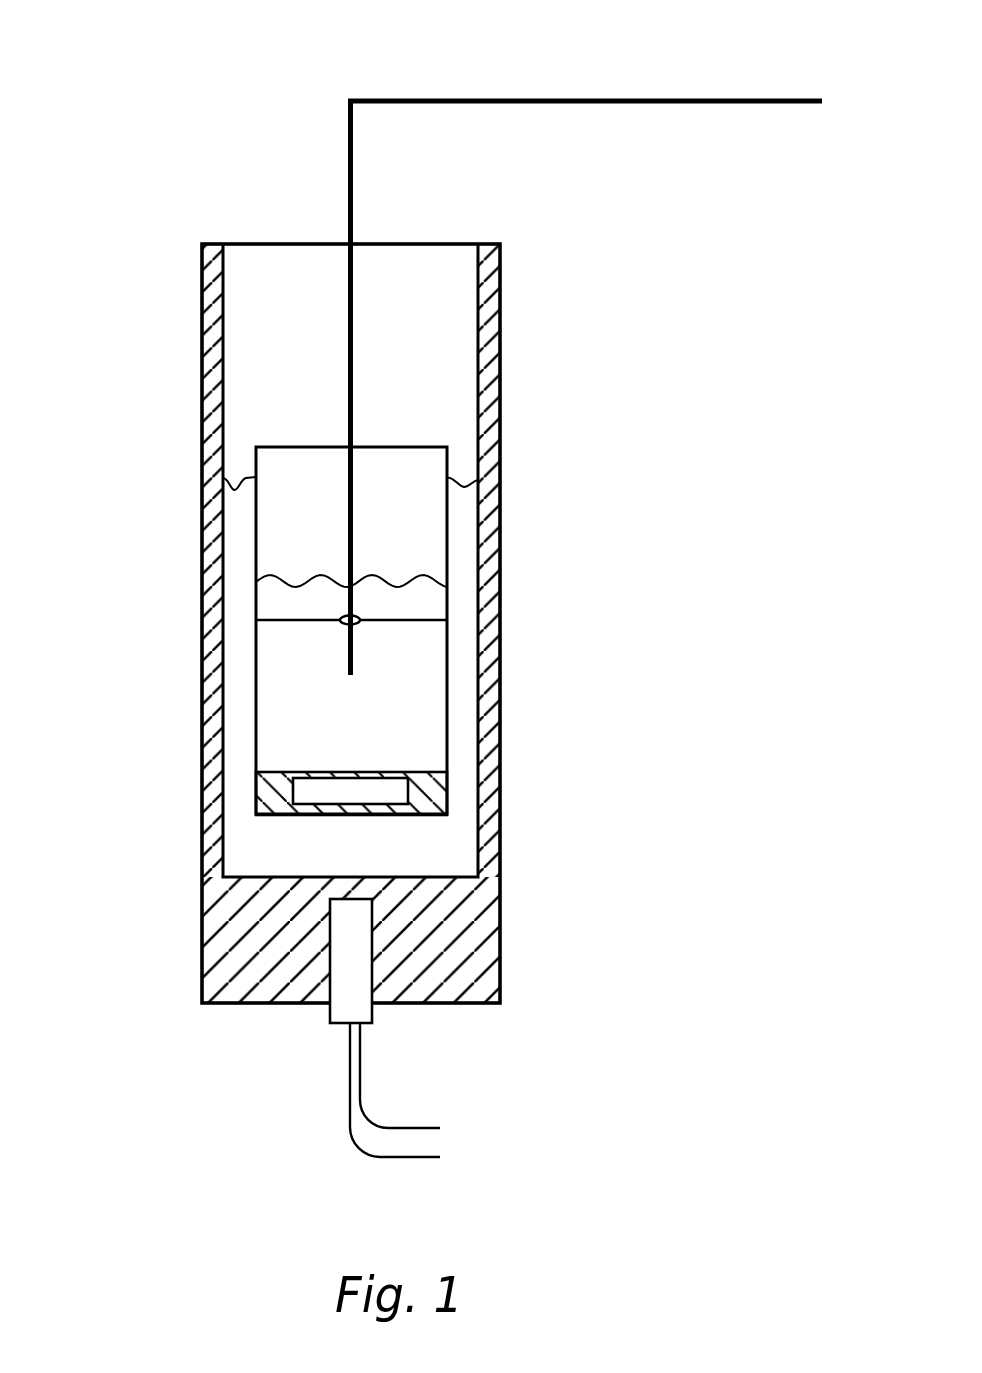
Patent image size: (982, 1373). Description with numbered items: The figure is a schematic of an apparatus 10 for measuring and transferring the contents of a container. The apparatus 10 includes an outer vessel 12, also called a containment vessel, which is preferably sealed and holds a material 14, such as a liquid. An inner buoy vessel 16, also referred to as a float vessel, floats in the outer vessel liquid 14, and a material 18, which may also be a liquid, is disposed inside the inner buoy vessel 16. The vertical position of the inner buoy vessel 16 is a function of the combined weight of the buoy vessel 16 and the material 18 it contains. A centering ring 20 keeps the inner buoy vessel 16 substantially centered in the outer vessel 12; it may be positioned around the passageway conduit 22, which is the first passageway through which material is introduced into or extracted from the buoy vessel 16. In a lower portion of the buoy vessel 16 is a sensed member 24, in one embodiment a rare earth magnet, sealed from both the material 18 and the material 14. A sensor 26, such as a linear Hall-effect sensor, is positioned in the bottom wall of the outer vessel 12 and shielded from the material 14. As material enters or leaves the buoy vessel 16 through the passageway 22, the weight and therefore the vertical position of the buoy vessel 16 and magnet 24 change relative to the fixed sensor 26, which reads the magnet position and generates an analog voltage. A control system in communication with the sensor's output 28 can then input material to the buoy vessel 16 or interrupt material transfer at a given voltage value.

The apparatus 10 is at (668, 421).
The outer vessel 12 is at (202, 295).
The material 14 is at (233, 490).
The inner buoy vessel 16 is at (447, 537).
The material 18 is at (291, 586).
The centering ring 20 is at (290, 622).
The passageway conduit 22 is at (585, 100).
The sensed member 24 is at (408, 794).
The sensor 26 is at (372, 940).
The sensor's output 28 is at (413, 1128).